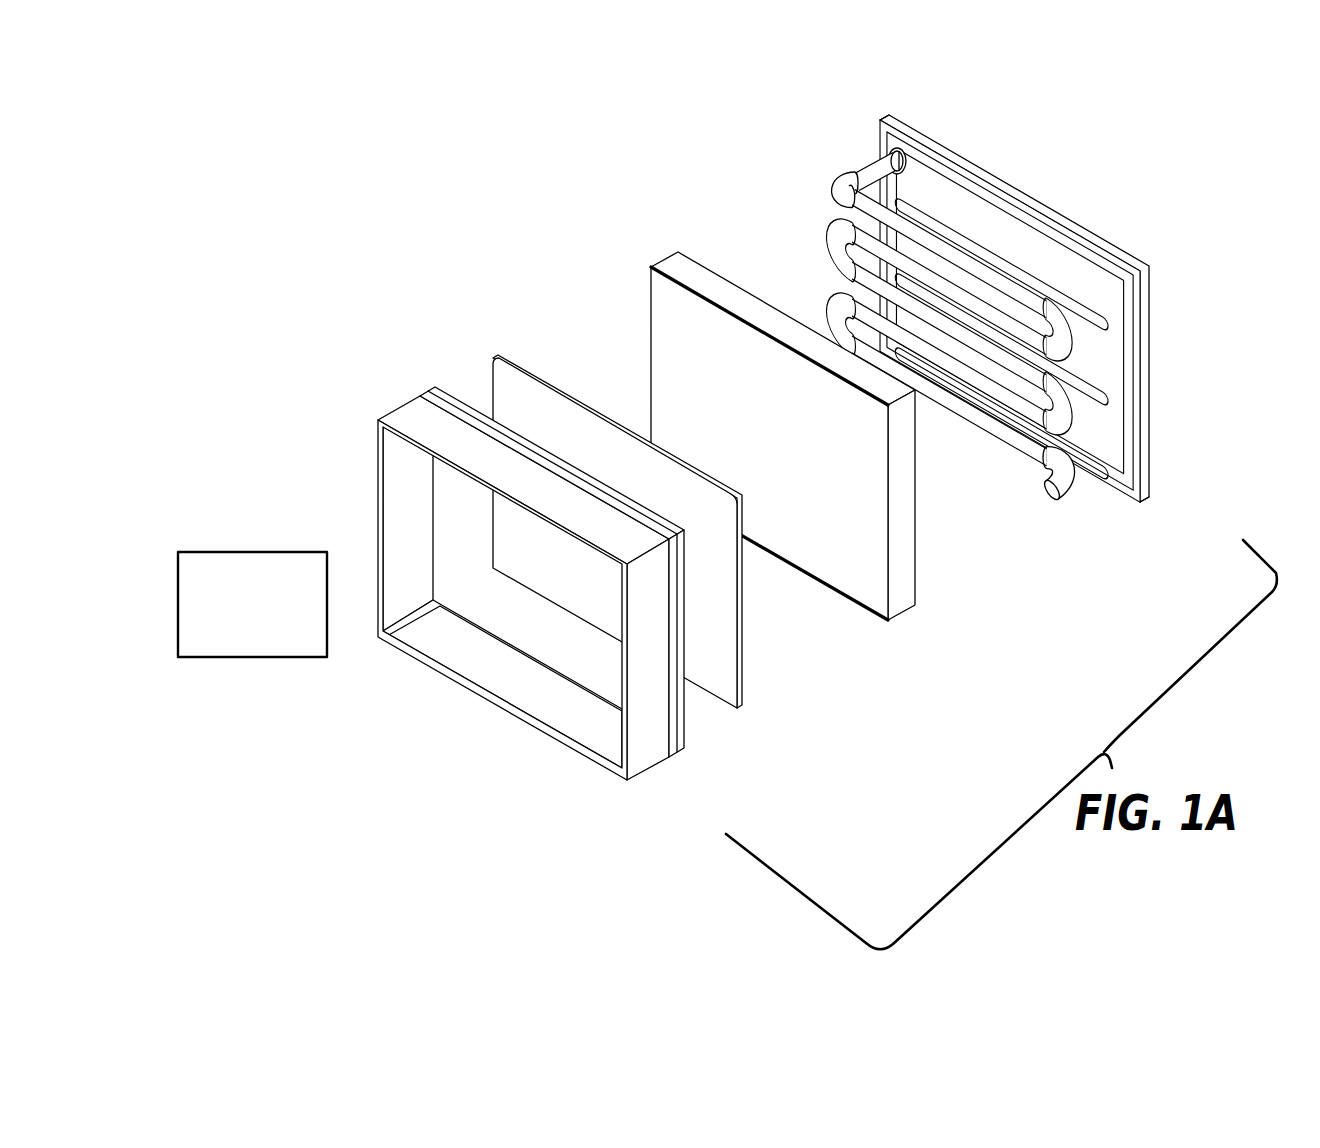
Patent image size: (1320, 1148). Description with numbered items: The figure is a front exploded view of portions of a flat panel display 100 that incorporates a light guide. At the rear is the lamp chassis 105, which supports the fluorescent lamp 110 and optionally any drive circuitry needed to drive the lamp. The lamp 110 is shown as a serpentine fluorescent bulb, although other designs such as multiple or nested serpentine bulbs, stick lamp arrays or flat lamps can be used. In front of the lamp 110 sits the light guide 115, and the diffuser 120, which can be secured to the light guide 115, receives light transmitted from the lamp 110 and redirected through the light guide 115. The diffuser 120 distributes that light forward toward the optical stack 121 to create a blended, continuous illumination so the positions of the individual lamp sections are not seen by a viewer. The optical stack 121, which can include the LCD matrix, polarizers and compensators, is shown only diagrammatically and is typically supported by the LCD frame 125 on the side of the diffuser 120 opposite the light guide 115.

The flat panel display 100 is at (590, 193).
The lamp chassis 105 is at (1158, 493).
The lamp 110 is at (1066, 498).
The light guide 115 is at (918, 613).
The diffuser 120 is at (746, 708).
The optical stack 121 is at (226, 550).
The LCD frame 125 is at (691, 758).